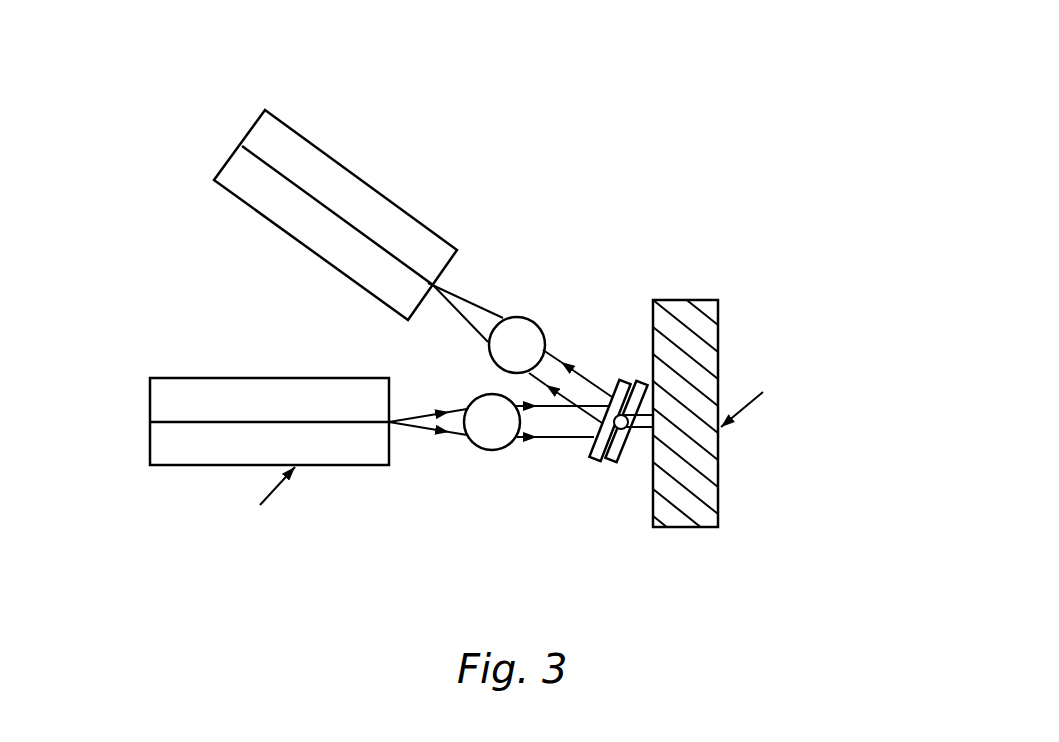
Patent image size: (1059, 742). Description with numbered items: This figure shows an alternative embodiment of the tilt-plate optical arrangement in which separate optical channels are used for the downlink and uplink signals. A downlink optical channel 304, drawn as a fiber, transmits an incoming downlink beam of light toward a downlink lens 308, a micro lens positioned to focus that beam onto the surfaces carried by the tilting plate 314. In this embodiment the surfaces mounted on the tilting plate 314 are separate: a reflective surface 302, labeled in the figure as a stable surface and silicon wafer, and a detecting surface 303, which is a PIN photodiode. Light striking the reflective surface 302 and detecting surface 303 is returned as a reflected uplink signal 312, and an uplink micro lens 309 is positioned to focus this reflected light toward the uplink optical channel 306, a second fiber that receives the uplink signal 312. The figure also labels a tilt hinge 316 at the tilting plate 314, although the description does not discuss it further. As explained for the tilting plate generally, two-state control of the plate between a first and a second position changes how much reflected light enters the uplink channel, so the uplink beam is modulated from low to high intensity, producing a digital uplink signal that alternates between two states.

The reflective surface 302 is at (672, 298).
The detecting surface 303 is at (623, 370).
The downlink optical channel 304 is at (150, 422).
The uplink optical channel 306 is at (292, 127).
The downlink lens 308 is at (431, 437).
The uplink micro lens 309 is at (517, 317).
The uplink signal 312 is at (492, 452).
The tilting plate 314 is at (606, 462).
The tilt hinge 316 is at (631, 434).